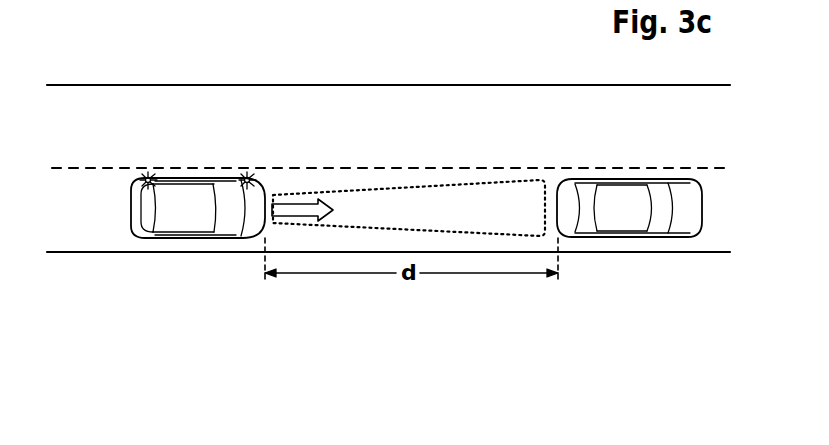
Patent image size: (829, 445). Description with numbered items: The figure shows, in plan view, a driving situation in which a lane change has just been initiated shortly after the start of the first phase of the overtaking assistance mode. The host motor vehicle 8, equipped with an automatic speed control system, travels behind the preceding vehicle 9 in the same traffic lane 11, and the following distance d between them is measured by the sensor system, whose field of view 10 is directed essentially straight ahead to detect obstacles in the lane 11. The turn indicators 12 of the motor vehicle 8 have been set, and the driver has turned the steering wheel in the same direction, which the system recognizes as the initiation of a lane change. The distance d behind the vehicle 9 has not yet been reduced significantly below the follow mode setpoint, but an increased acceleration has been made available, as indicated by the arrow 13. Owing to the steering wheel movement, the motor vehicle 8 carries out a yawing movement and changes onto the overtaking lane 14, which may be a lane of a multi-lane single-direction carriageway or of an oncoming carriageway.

The host motor vehicle 8 is at (204, 178).
The preceding vehicle 9 is at (655, 180).
The field of view 10 is at (438, 205).
The traffic lane 11 is at (720, 213).
The turn indicators 12 is at (150, 178).
The arrow 13 is at (300, 207).
The overtaking lane 14 is at (721, 127).